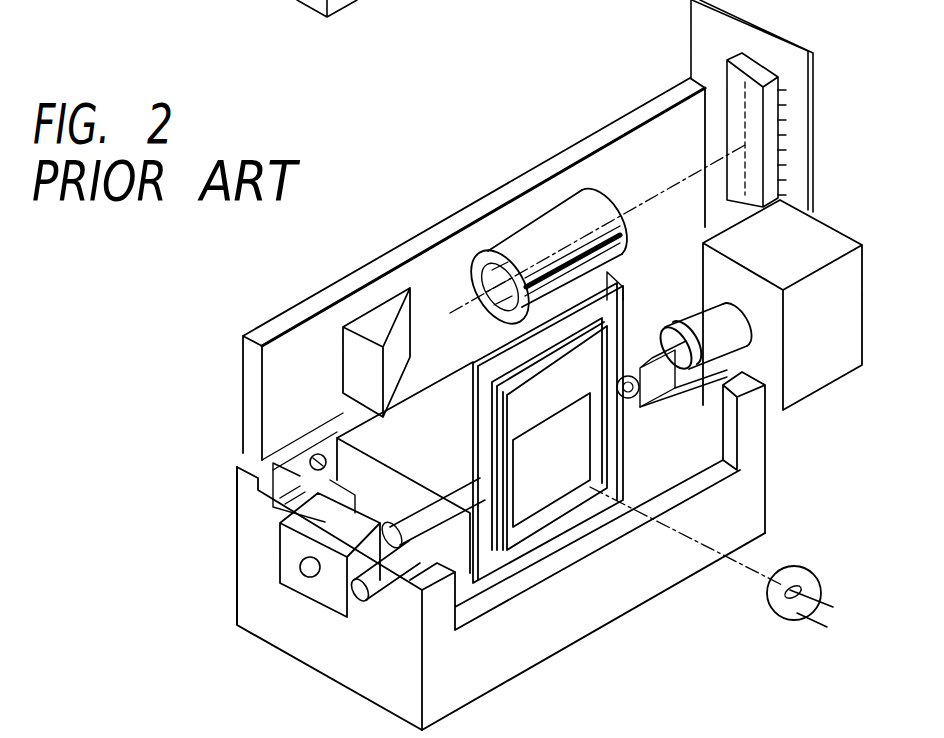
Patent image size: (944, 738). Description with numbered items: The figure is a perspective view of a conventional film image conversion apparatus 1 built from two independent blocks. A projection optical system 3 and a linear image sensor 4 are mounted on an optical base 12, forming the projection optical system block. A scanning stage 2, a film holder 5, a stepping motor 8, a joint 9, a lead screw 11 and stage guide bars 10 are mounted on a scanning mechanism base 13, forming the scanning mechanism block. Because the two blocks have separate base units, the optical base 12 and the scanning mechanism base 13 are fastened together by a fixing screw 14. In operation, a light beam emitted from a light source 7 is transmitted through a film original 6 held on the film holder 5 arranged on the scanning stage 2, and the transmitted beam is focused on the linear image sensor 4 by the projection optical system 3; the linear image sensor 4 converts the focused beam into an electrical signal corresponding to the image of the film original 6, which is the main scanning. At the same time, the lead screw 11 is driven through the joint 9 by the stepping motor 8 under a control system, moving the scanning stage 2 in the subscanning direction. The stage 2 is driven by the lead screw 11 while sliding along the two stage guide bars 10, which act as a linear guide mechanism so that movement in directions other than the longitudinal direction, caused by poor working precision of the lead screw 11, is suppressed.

The optical apparatus 1 is at (288, 10).
The scanning stage 2 is at (507, 562).
The projection optical system 3 is at (551, 229).
The linear image sensor 4 is at (757, 105).
The film holder 5 is at (597, 490).
The film original 6 is at (530, 490).
The light source 7 is at (823, 583).
The stepping motor 8 is at (850, 273).
The joint 9 is at (700, 318).
The stage guide bars 10 is at (350, 595).
The lead screw 11 is at (383, 583).
The optical base 12 is at (290, 347).
The scanning mechanism base 13 is at (752, 484).
The fixing screw 14 is at (310, 460).